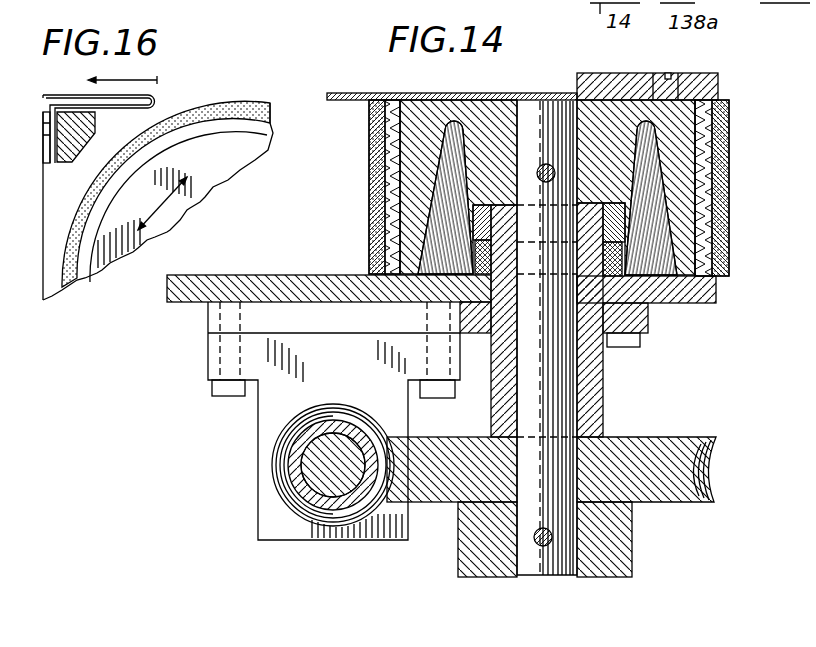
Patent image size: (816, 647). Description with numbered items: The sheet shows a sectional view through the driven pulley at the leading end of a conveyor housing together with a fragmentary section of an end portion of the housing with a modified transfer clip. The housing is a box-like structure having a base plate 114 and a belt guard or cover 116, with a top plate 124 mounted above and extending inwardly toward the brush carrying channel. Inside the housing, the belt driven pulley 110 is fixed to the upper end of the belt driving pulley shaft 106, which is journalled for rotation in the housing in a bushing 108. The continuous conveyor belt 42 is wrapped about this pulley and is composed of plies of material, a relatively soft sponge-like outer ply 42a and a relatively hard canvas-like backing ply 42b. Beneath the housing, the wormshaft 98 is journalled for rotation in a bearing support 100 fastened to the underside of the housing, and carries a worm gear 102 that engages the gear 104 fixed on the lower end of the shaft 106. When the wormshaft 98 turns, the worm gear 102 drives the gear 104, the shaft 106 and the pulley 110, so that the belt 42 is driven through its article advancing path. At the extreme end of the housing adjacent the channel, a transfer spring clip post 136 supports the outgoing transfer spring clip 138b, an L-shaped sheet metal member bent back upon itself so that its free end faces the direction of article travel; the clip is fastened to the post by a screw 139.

In FIG. 16, the conveyor belt 42 is at (243, 107).
In FIG. 14, the conveyor belt 42 is at (360, 211).
In FIG. 14, the outer ply 42a is at (372, 179).
In FIG. 14, the backing ply 42b is at (400, 138).
In FIG. 14, the wormshaft 98 is at (325, 423).
In FIG. 14, the bearing support 100 is at (262, 423).
In FIG. 14, the worm gear 102 is at (275, 470).
In FIG. 14, the gear 104 is at (682, 437).
In FIG. 14, the belt driving pulley shaft 106 is at (563, 404).
In FIG. 14, the bushing 108 is at (602, 366).
In FIG. 16, the belt driven pulley 110 is at (238, 167).
In FIG. 14, the belt driven pulley 110 is at (490, 110).
In FIG. 14, the base plate 114 is at (287, 269).
In FIG. 14, the belt guard or cover 116 is at (373, 93).
In FIG. 14, the top plate 124 is at (718, 97).
In FIG. 16, the transfer spring clip post 136 is at (50, 176).
In FIG. 16, the outgoing transfer spring clip 138b is at (152, 100).
In FIG. 16, the screw 139 is at (35, 135).